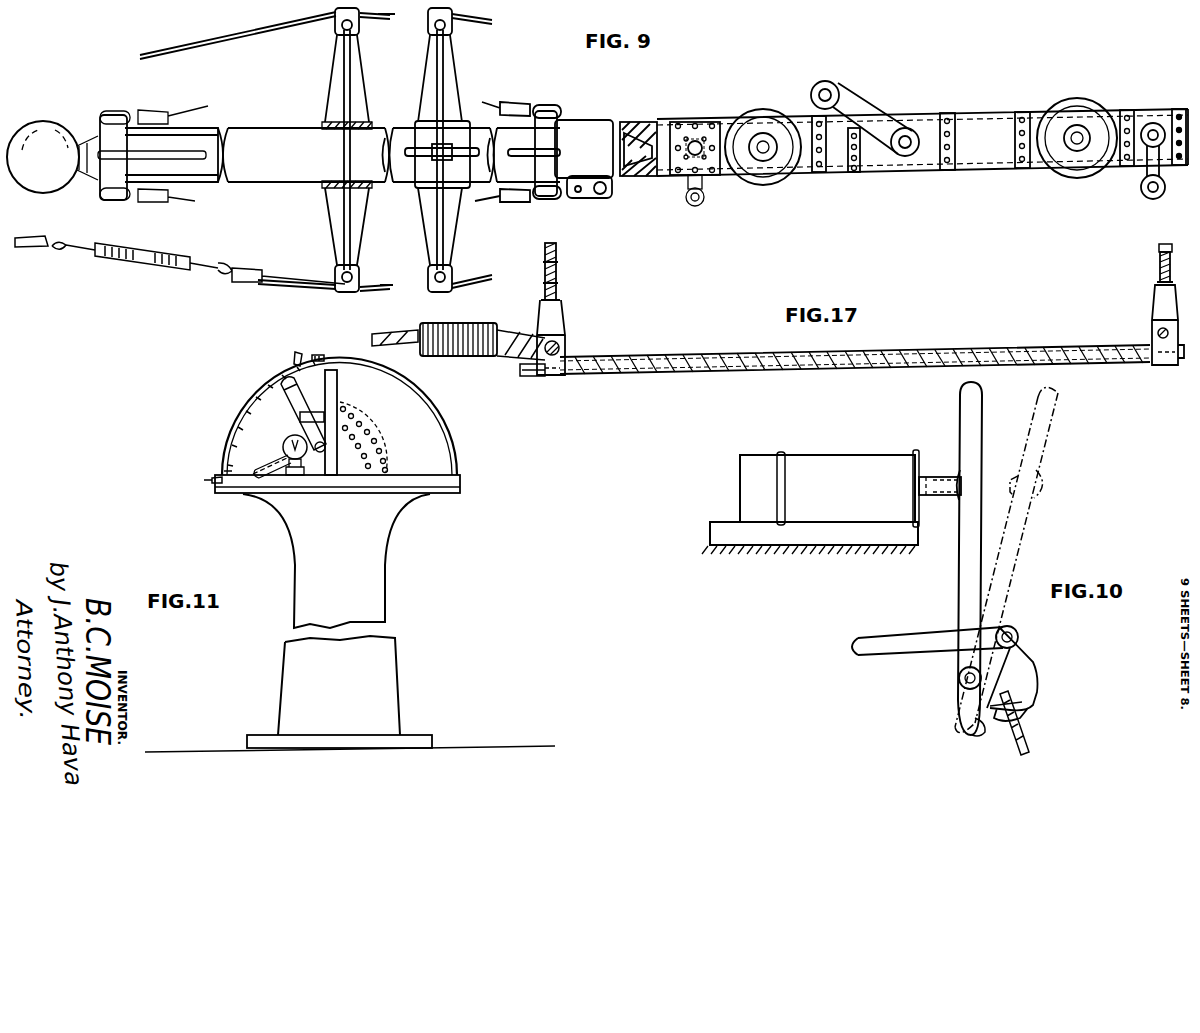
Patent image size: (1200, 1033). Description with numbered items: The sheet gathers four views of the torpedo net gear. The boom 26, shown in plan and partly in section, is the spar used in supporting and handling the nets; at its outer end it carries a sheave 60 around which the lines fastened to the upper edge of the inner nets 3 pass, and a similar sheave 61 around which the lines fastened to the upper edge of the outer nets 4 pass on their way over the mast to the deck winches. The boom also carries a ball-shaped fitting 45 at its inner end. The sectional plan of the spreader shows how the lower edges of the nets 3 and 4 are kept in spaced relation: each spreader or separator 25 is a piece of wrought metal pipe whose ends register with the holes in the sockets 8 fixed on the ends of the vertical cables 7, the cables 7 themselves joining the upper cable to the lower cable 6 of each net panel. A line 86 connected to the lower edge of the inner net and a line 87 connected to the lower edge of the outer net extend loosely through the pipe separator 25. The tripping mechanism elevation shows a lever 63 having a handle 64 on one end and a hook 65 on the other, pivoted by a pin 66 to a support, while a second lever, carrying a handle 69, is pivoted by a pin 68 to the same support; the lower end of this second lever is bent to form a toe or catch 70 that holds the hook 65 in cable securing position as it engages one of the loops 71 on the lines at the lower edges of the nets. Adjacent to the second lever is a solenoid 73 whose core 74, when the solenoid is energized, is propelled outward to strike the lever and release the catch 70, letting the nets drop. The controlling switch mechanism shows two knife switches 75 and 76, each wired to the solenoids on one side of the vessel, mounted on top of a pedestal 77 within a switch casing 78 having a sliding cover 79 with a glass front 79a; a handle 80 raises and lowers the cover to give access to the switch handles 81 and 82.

In FIG. 9, the ball 45 is at (52, 128).
In FIG. 9, the boom 26 is at (304, 174).
In FIG. 9, the sheave 61 is at (772, 185).
In FIG. 9, the sheave 60 is at (1066, 177).
In FIG. 17, the inner net 3 is at (557, 262).
In FIG. 17, the outer net 4 is at (1158, 250).
In FIG. 17, the lower rope or cable 6 is at (561, 347).
In FIG. 17, the vertical cable 7 is at (557, 290).
In FIG. 17, the socket 8 is at (563, 324).
In FIG. 17, the spreader or separator 25 is at (698, 363).
In FIG. 17, the line 86 is at (394, 336).
In FIG. 17, the line 87 is at (530, 376).
In FIG. 11, the switch casing 78 is at (452, 442).
In FIG. 11, the sliding cover 79 is at (223, 463).
In FIG. 11, the glass front 79a is at (243, 408).
In FIG. 11, the handle 80 is at (293, 354).
In FIG. 11, the switch handle 81 is at (304, 388).
In FIG. 11, the switch 75 is at (298, 424).
In FIG. 11, the switch 76 is at (282, 458).
In FIG. 11, the switch handle 82 is at (262, 470).
In FIG. 11, the pedestal 77 is at (375, 580).
In FIG. 10, the solenoid 73 is at (812, 464).
In FIG. 10, the core 74 is at (923, 475).
In FIG. 10, the handle 69 is at (979, 398).
In FIG. 10, the handle 64 is at (866, 642).
In FIG. 10, the pin 66 is at (1016, 632).
In FIG. 10, the lever 63 is at (1022, 668).
In FIG. 10, the pin 68 is at (958, 681).
In FIG. 10, the hook 65 is at (1020, 704).
In FIG. 10, the toe or catch 70 is at (982, 732).
In FIG. 10, the loop 71 is at (1028, 742).